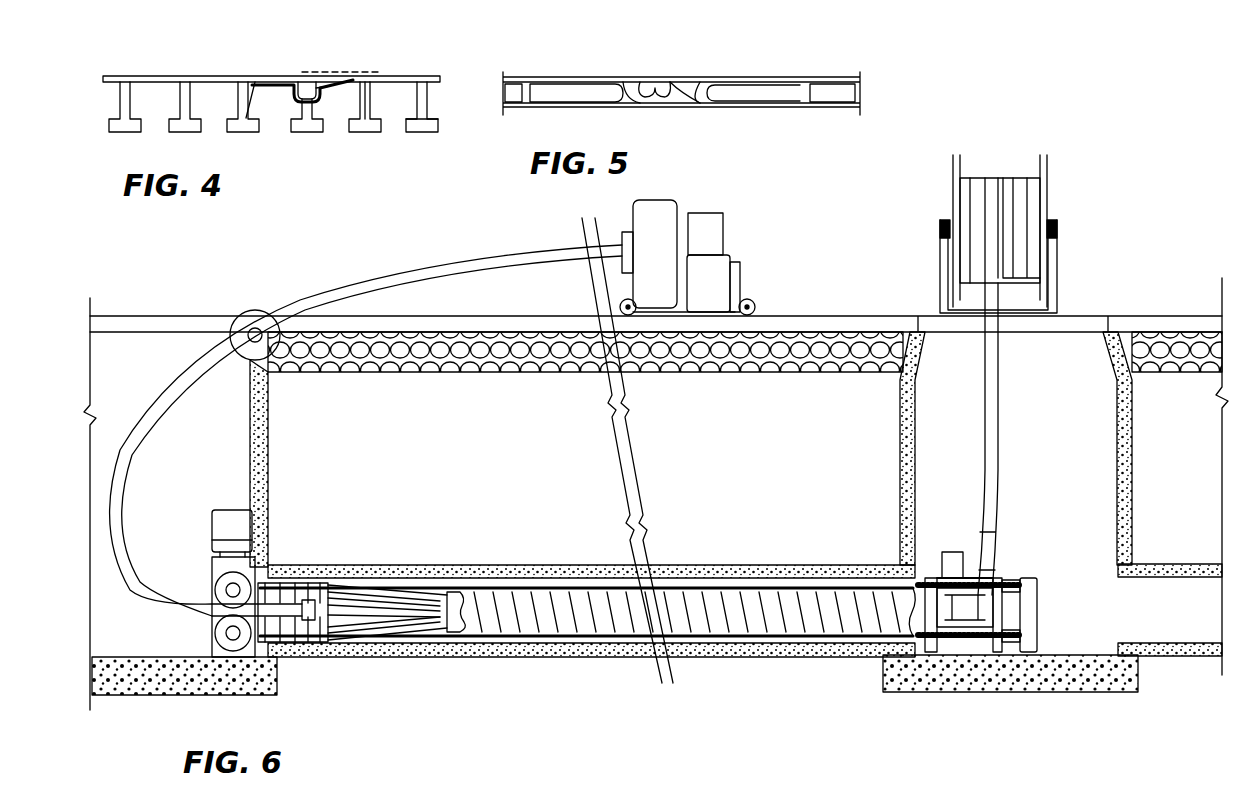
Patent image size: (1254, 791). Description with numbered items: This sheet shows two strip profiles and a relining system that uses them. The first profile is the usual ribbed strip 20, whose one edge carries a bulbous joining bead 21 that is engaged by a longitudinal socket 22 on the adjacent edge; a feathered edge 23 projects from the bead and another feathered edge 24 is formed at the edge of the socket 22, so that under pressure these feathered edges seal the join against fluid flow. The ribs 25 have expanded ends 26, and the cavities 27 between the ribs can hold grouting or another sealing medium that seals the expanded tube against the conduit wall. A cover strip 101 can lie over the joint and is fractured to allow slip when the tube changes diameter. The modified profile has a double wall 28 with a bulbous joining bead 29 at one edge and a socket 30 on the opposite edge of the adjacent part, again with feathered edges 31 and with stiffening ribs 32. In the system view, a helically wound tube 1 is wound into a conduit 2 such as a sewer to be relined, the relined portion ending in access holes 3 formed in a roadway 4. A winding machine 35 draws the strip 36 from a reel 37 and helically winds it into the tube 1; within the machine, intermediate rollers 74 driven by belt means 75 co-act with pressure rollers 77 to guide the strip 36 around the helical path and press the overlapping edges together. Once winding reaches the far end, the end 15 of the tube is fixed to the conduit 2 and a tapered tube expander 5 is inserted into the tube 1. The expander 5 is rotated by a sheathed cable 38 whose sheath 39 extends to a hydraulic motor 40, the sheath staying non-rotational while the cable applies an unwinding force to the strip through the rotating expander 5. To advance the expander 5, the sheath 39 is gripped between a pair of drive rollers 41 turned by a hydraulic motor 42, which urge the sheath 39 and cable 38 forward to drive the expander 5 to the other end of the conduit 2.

In FIG. 6, the helically wound tube 1 is at (750, 600).
In FIG. 6, the conduit 2 is at (697, 565).
In FIG. 6, the access holes 3 is at (1062, 396).
In FIG. 6, the roadway 4 is at (848, 323).
In FIG. 6, the tube expander 5 is at (402, 612).
In FIG. 6, the end of the tube 15 is at (260, 583).
In FIG. 4, the ribbed strip 20 is at (392, 75).
In FIG. 4, the bulbous joining bead 21 is at (303, 82).
In FIG. 4, the longitudinal socket 22 is at (313, 104).
In FIG. 4, the feathered edge 23 is at (318, 78).
In FIG. 4, the feathered edge 24 is at (252, 82).
In FIG. 4, the ribs 25 is at (430, 103).
In FIG. 4, the expanded ends 26 is at (423, 134).
In FIG. 4, the cavities 27 is at (389, 113).
In FIG. 5, the double wall 28 is at (570, 82).
In FIG. 5, the bulbous joining bead 29 is at (672, 80).
In FIG. 5, the socket 30 is at (702, 82).
In FIG. 5, the feathered edges 31 is at (588, 100).
In FIG. 5, the stiffening ribs 32 is at (805, 90).
In FIG. 6, the winding machine 35 is at (1008, 574).
In FIG. 4, the strip 36 is at (176, 60).
In FIG. 5, the strip 36 is at (878, 80).
In FIG. 6, the strip 36 is at (998, 435).
In FIG. 6, the reel 37 is at (1047, 173).
In FIG. 6, the sheathed cable 38 is at (325, 583).
In FIG. 6, the sheath 39 is at (128, 432).
In FIG. 6, the hydraulic motor 40 is at (700, 272).
In FIG. 6, the drive rollers 41 is at (212, 631).
In FIG. 6, the hydraulic motor 42 is at (212, 528).
In FIG. 6, the intermediate rollers 74 is at (935, 575).
In FIG. 6, the belt means 75 is at (1037, 607).
In FIG. 6, the pressure rollers 77 is at (953, 607).
In FIG. 4, the strip 101 is at (358, 72).